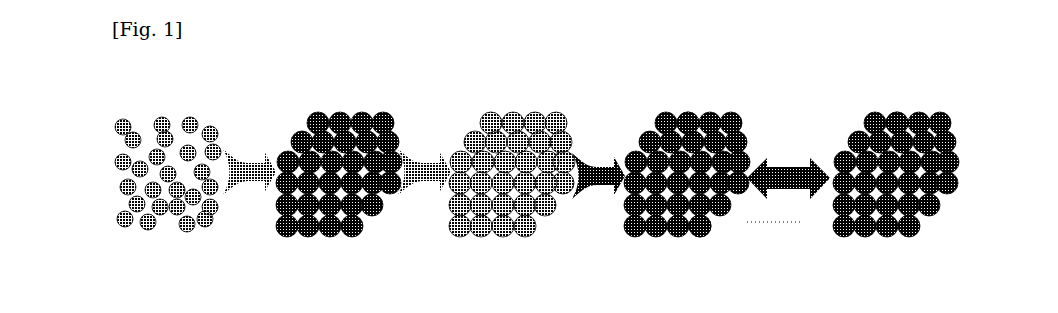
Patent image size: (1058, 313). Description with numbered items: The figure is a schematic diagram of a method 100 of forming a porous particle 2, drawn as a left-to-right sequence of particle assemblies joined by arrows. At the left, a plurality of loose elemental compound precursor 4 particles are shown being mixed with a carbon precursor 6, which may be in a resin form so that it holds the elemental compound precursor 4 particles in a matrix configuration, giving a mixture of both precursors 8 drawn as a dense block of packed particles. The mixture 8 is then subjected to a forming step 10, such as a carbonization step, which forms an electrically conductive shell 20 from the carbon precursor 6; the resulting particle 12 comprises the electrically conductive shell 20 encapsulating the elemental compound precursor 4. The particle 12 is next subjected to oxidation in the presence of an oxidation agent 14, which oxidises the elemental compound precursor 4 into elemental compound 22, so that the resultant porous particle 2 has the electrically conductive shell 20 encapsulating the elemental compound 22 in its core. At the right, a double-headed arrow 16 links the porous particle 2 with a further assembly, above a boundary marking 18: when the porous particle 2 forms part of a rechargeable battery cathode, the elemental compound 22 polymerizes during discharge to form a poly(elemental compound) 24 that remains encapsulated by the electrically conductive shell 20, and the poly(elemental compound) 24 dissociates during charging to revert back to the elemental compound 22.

The method 100 is at (100, 235).
The elemental compound precursor 4 is at (148, 240).
The carbon precursor 6 is at (249, 167).
The mixture 8 is at (273, 251).
The forming step 10 is at (424, 167).
The particle 12 is at (488, 241).
The oxidation agent 14 is at (598, 169).
The porous particle 2 is at (680, 241).
The reversible conversion 16 is at (788, 169).
The boundary 18 is at (773, 213).
The electrically conductive shell 20 is at (690, 113).
The elemental compound 22 is at (720, 238).
The poly(elemental compound) 24 is at (919, 236).